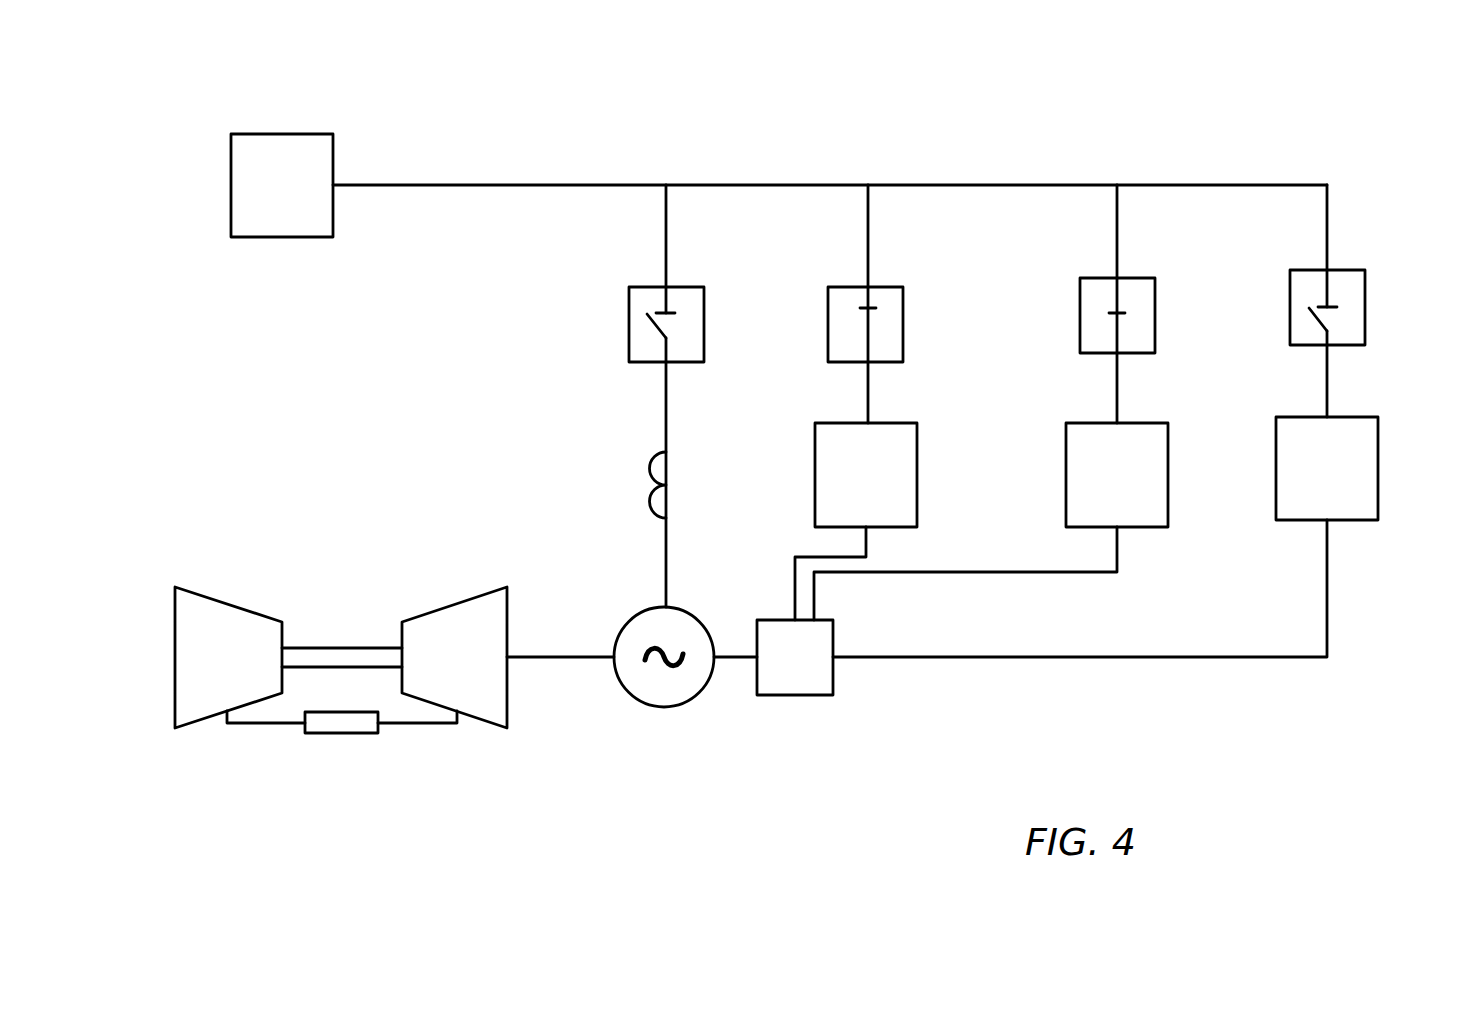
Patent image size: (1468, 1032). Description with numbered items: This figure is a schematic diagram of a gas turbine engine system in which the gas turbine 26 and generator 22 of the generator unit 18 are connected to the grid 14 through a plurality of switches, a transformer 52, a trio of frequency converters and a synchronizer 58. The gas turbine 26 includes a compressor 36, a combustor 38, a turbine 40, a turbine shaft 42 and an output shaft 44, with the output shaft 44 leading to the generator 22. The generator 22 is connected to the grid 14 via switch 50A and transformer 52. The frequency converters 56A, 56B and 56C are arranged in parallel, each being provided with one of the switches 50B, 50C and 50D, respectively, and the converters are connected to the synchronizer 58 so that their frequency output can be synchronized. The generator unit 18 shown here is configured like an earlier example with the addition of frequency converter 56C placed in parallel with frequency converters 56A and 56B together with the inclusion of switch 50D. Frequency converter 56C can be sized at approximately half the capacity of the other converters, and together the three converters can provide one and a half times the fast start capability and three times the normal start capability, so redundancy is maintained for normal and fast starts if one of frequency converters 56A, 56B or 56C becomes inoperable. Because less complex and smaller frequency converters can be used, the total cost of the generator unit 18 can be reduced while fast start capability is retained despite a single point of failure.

The grid 14 is at (287, 137).
The generator unit 18 is at (700, 757).
The generator 22 is at (630, 743).
The gas turbine 26 is at (294, 646).
The compressor 36 is at (175, 655).
The combustor 38 is at (340, 735).
The turbine 40 is at (480, 728).
The turbine shaft 42 is at (341, 648).
The output shaft 44 is at (560, 660).
The switch 50A is at (629, 325).
The switch 50B is at (903, 323).
The switch 50C is at (1155, 313).
The switch 50D is at (1365, 305).
The transformer 52 is at (655, 478).
The frequency converter 56A is at (917, 477).
The frequency converter 56B is at (1168, 477).
The frequency converter 56C is at (1378, 470).
The synchronizer 58 is at (795, 695).